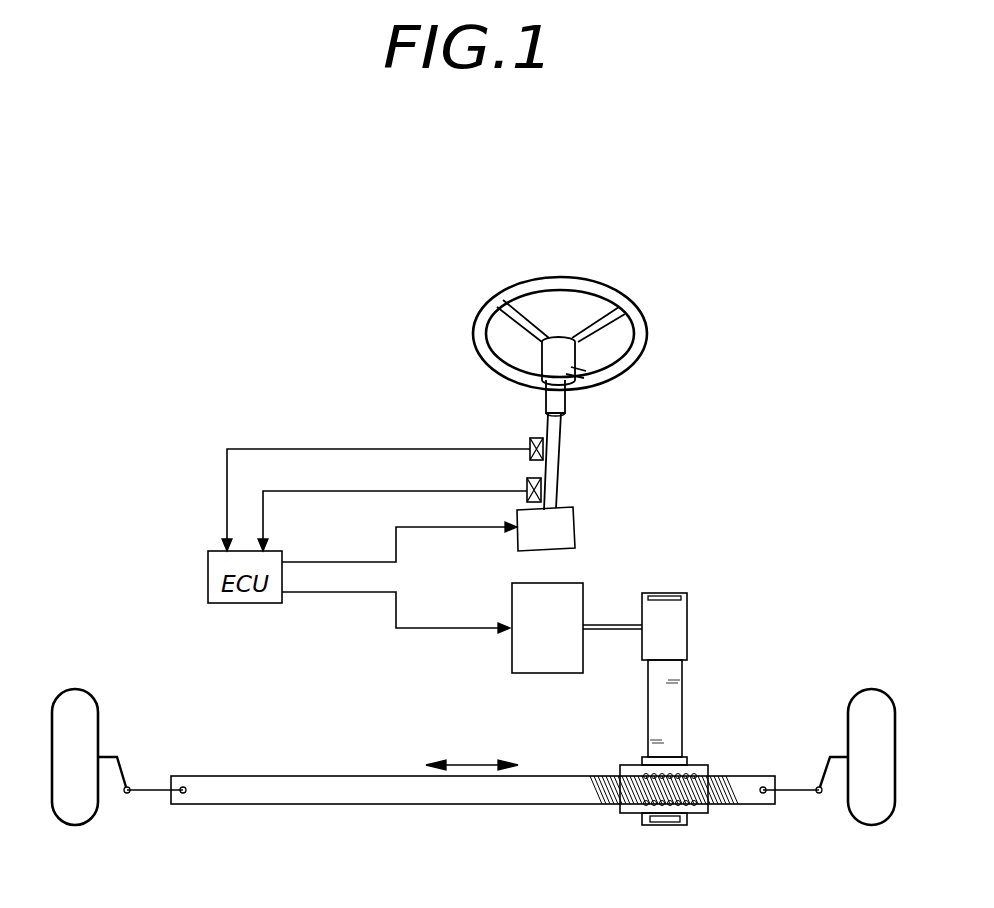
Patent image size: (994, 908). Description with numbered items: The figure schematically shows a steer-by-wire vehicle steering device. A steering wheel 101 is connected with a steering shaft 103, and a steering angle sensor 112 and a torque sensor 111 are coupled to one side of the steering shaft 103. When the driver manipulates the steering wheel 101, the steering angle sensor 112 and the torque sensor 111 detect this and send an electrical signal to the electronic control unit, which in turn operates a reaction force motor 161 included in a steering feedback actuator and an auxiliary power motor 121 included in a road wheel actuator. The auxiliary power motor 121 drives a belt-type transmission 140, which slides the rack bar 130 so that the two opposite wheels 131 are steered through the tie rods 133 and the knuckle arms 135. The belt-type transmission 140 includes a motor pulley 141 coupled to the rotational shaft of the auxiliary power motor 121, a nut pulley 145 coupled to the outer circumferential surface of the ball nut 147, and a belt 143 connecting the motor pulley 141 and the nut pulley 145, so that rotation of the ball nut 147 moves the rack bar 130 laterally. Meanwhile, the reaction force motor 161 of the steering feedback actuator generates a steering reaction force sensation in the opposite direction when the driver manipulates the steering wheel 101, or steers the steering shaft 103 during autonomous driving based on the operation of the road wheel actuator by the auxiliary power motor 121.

The steering wheel 101 is at (641, 339).
The steering shaft 103 is at (558, 462).
The torque sensor 111 is at (527, 490).
The steering angle sensor 112 is at (528, 441).
The auxiliary power motor 121 is at (510, 650).
The rack bar 130 is at (387, 795).
The wheel 131 is at (87, 717).
The tie rods 133 is at (143, 795).
The knuckle arms 135 is at (122, 770).
The belt-type transmission 140 is at (692, 703).
The motor pulley 141 is at (677, 625).
The belt 143 is at (672, 703).
The nut pulley 145 is at (687, 762).
The ball nut 147 is at (698, 810).
The reaction force motor 161 is at (575, 530).